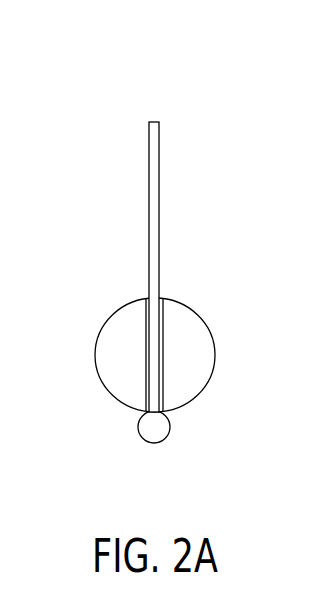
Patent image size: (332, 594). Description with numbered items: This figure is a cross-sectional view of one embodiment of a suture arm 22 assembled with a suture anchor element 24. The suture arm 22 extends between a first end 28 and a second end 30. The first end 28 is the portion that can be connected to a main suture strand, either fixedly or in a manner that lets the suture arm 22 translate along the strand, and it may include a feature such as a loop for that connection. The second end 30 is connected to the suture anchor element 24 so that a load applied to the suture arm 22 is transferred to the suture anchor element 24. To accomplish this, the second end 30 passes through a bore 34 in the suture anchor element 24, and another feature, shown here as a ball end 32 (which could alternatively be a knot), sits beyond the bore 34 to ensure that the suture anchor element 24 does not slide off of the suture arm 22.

The suture arm 22 is at (159, 190).
The suture anchor element 24 is at (95, 352).
The first end 28 is at (167, 119).
The second end 30 is at (177, 438).
The ball end 32 is at (138, 425).
The bore 34 is at (162, 299).